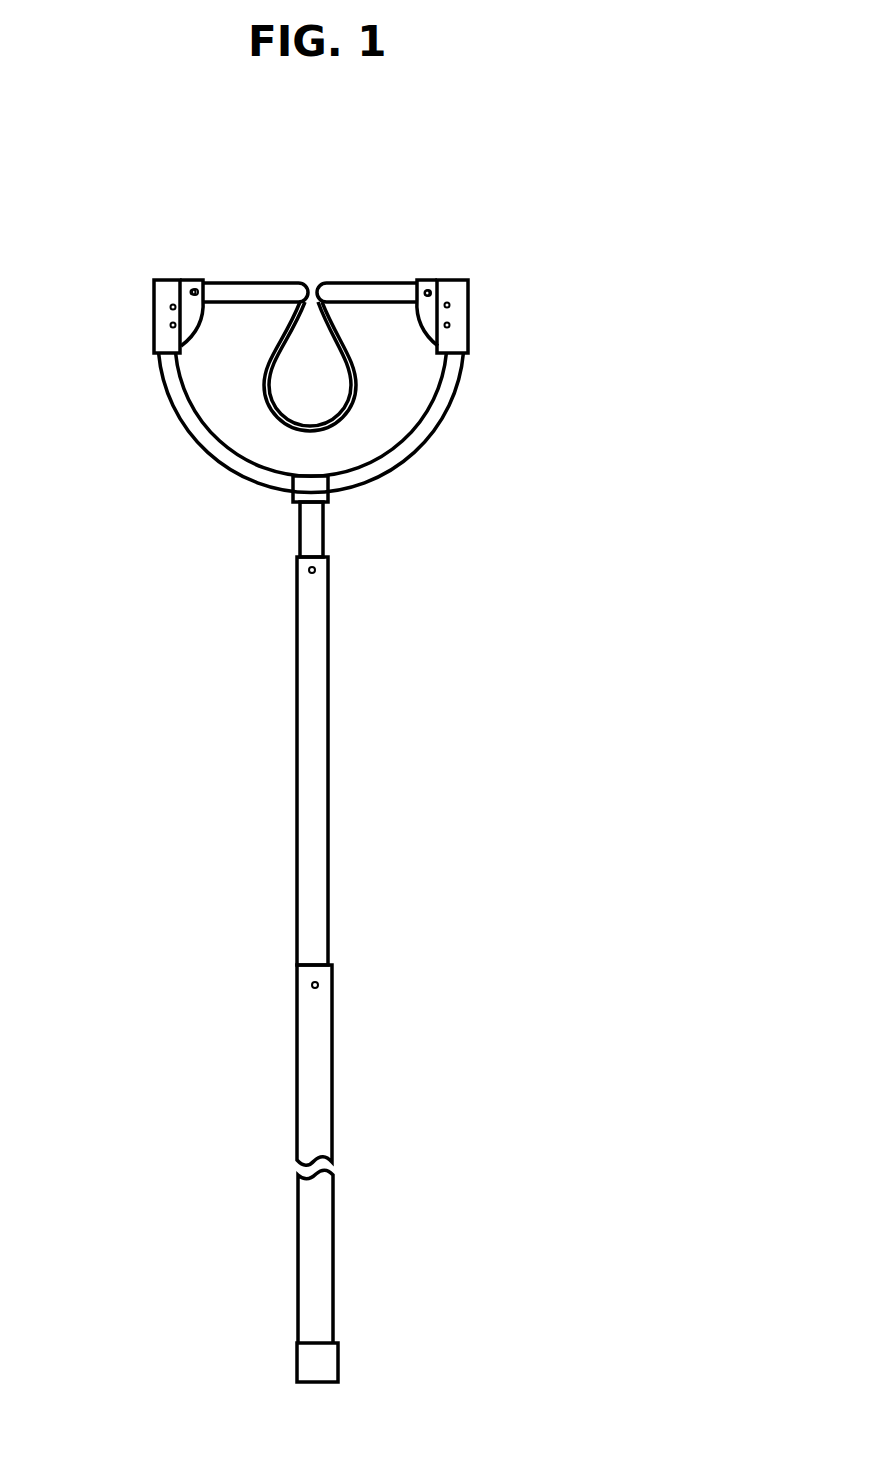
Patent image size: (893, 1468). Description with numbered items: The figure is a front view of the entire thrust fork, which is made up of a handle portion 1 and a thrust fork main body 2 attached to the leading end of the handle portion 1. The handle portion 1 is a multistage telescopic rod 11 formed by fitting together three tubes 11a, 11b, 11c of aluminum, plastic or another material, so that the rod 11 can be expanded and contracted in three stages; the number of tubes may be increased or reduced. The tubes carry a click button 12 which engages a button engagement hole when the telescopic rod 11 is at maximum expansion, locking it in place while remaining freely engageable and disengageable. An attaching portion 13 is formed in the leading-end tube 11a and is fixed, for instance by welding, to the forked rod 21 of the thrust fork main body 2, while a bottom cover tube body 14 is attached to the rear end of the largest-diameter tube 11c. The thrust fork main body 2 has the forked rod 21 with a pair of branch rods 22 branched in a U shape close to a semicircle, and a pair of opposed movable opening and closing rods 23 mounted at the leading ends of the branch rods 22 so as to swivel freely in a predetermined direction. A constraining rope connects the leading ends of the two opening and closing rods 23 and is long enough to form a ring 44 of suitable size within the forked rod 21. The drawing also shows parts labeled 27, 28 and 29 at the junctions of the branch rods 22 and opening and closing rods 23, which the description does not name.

The handle portion 1 is at (256, 700).
The thrust fork main body 2 is at (486, 372).
The telescopic rod 11 is at (292, 771).
The tube 11a is at (325, 528).
The tube 11b is at (317, 747).
The tube 11c is at (333, 1087).
The click button 12 is at (314, 572).
The attaching portion 13 is at (293, 495).
The bottom cover tube body 14 is at (338, 1350).
The forked rod 21 is at (429, 448).
The branch rods 22 is at (443, 403).
The movable opening and closing rods 23 is at (260, 283).
The pivot 27 is at (195, 292).
The pivot member 28 is at (207, 324).
The mounting plate 29 is at (149, 319).
The ring 44 is at (332, 397).